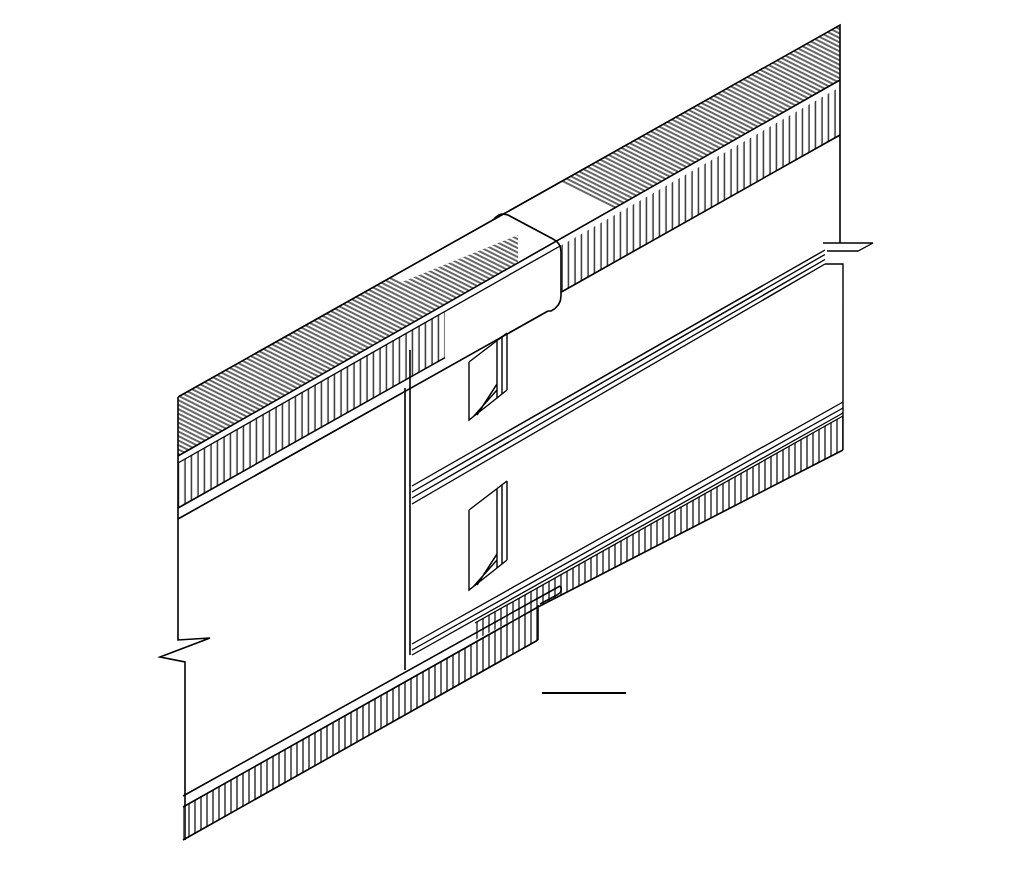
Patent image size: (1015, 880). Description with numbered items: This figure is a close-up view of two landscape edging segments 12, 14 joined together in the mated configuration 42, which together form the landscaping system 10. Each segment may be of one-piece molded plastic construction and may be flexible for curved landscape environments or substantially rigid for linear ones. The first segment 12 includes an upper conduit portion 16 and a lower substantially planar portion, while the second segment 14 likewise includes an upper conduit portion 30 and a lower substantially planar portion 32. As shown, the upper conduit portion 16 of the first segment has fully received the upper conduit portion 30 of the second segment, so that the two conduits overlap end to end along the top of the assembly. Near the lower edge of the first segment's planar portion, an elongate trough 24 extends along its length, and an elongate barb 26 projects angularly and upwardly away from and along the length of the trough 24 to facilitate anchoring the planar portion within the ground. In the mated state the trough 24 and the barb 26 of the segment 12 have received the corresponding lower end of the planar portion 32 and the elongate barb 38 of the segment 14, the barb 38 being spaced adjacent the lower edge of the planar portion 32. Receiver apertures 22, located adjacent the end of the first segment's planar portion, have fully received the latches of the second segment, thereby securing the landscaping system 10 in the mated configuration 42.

The landscaping system 10 is at (585, 118).
The landscape edging segment 12 is at (308, 322).
The landscape edging segment 14 is at (712, 94).
The upper conduit portion 16 is at (432, 258).
The receiver apertures 22 is at (497, 529).
The elongate trough 24 is at (360, 687).
The elongate barb 26 is at (553, 597).
The upper conduit portion 30 is at (549, 196).
The lower substantially planar portion 32 is at (815, 353).
The elongate barb 38 is at (843, 417).
The mated configuration 42 is at (170, 268).